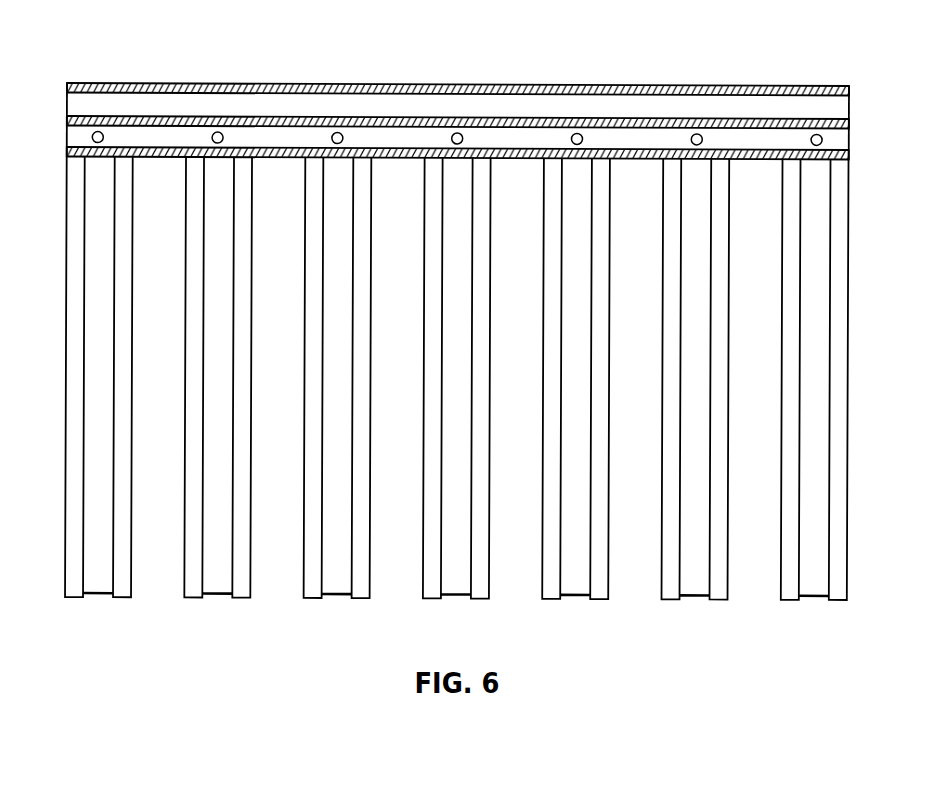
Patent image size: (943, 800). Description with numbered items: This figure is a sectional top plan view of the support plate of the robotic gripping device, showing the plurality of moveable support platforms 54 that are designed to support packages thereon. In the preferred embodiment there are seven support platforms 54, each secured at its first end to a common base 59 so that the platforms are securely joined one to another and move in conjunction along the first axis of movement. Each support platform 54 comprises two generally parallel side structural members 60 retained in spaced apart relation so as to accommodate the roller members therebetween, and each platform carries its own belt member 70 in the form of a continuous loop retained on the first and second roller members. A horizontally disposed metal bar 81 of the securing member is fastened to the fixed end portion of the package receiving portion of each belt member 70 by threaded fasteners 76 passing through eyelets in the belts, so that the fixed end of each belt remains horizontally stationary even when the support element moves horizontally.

The moveable support platform 54 is at (441, 414).
The common base 59 is at (140, 83).
The side structural member 60 is at (73, 597).
The belt member 70 is at (95, 594).
The threaded fastener 76 is at (212, 137).
The horizontally disposed metal bar 81 is at (65, 147).